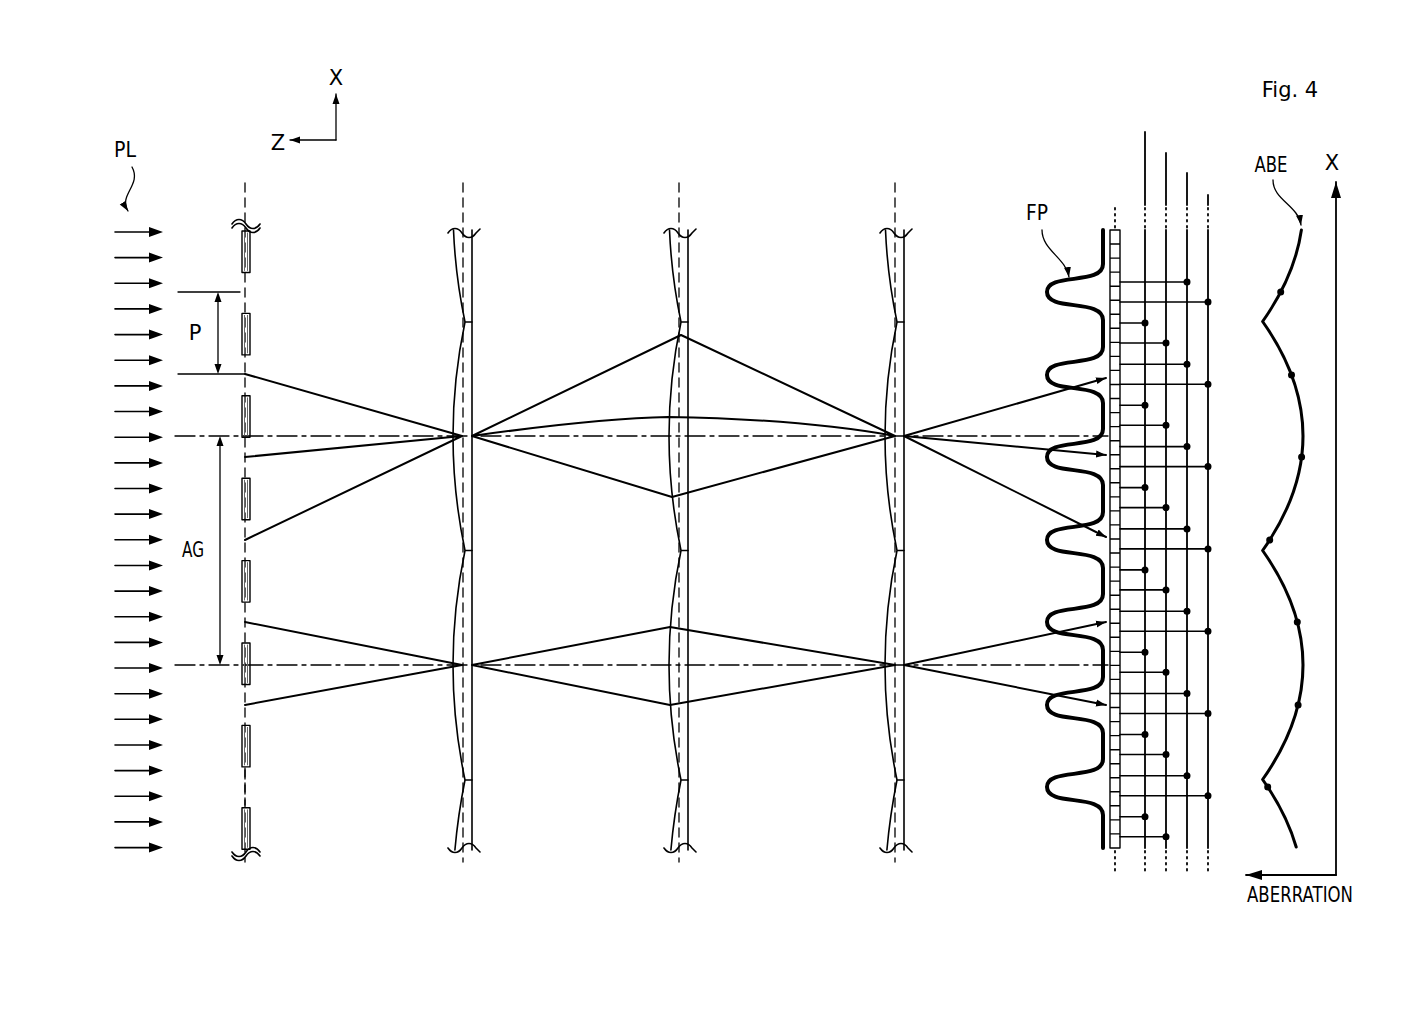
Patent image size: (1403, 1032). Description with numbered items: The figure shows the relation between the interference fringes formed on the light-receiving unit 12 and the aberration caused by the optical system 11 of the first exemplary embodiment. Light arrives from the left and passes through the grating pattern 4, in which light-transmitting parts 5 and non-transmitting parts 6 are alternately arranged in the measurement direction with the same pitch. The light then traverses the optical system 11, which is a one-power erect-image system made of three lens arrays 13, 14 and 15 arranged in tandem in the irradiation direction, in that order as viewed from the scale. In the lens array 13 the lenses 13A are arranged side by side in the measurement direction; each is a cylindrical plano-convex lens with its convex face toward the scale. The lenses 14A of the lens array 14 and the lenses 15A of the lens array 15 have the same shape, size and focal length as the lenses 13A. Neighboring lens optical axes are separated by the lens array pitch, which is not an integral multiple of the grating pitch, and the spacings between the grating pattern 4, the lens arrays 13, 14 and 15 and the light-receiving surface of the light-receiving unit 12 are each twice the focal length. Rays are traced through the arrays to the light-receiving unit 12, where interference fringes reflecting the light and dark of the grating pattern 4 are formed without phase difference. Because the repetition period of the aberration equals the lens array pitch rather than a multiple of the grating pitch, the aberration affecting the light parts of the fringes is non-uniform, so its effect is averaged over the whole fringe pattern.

The grating pattern 4 is at (232, 209).
The light-transmitting parts 5 is at (243, 786).
The non-transmitting parts 6 is at (242, 823).
The optical system 11 is at (862, 140).
The light-receiving unit 12 is at (1094, 179).
The lens array 13 is at (443, 217).
The lenses 13A is at (477, 291).
The lens array 14 is at (658, 217).
The lenses 14A is at (693, 291).
The lens array 15 is at (873, 217).
The lenses 15A is at (909, 291).